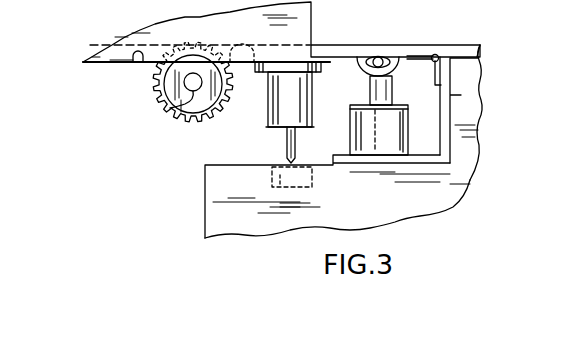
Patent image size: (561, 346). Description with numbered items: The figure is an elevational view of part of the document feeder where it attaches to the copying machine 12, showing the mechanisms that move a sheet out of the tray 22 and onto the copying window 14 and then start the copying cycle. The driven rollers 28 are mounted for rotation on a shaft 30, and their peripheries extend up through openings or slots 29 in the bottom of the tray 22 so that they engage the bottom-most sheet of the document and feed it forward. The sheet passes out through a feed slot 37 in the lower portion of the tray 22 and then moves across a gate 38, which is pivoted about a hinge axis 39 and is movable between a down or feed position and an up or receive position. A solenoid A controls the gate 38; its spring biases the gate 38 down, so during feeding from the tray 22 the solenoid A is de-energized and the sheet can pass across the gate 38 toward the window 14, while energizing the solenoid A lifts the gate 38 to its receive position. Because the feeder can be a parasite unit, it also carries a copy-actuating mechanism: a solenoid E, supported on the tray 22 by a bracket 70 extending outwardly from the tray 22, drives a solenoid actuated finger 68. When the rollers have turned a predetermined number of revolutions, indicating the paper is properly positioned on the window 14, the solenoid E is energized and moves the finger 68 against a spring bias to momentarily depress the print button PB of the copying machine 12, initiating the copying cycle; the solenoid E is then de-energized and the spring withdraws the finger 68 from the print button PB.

The copying machine 12 is at (204, 207).
The copying window 14 is at (484, 48).
The tray 22 is at (302, 38).
The driven rollers 28 is at (152, 85).
The openings or slots 29 is at (140, 65).
The shaft 30 is at (173, 107).
The feed slot 37 is at (313, 30).
The gate 38 is at (397, 46).
The hinge axis 39 is at (438, 55).
The solenoid actuated finger 68 is at (287, 135).
The bracket 70 is at (266, 72).
The solenoid E is at (311, 106).
The solenoid A is at (406, 120).
The print button PB is at (272, 181).